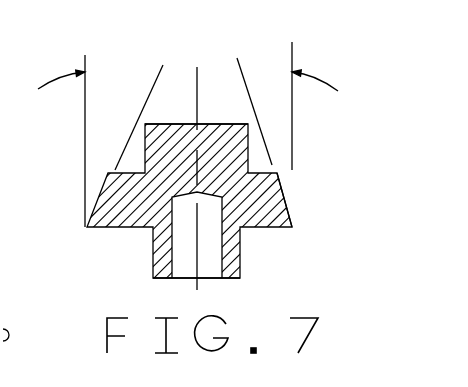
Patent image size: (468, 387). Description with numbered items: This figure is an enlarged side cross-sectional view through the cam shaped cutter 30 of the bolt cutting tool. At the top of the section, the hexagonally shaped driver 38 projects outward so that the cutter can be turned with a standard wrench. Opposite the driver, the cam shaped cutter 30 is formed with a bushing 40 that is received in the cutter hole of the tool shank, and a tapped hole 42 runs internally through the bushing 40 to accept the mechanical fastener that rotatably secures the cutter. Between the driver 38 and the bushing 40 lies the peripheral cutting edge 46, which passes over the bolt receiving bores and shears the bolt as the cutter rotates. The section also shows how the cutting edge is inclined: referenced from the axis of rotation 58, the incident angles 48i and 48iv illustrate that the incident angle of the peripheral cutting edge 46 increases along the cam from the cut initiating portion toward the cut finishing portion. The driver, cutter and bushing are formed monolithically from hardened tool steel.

The cam shaped cutter 30 is at (296, 238).
The hexagonally shaped driver 38 is at (205, 123).
The bushing 40 is at (240, 270).
The tapped hole 42 is at (212, 243).
The peripheral cutting edge 46 is at (292, 225).
The incident angle 48i is at (207, 92).
The incident angle 48iv is at (188, 98).
The axis of rotation 58 is at (198, 173).